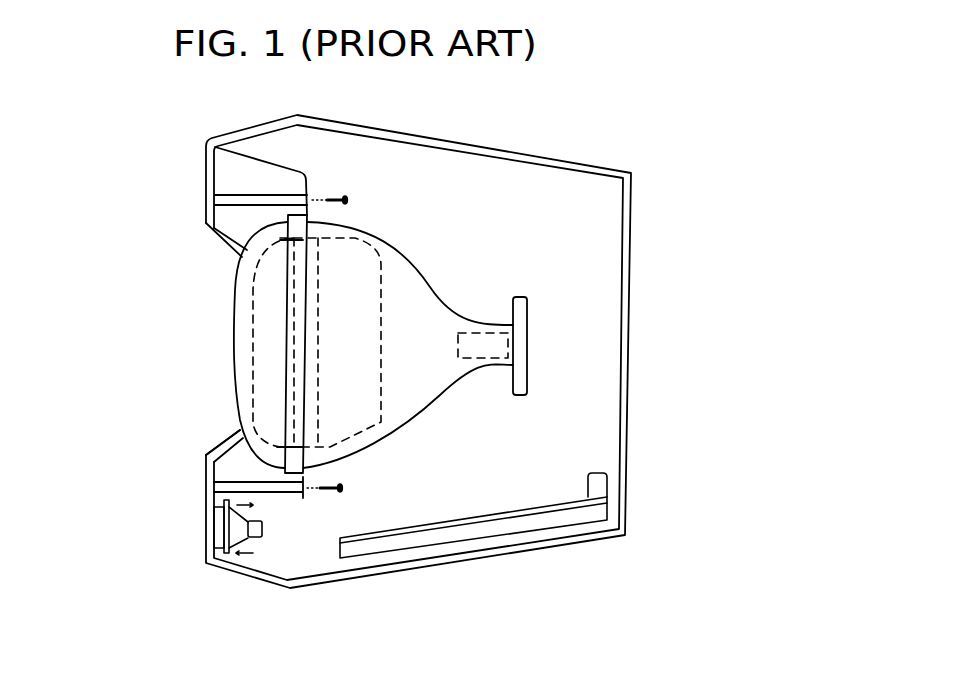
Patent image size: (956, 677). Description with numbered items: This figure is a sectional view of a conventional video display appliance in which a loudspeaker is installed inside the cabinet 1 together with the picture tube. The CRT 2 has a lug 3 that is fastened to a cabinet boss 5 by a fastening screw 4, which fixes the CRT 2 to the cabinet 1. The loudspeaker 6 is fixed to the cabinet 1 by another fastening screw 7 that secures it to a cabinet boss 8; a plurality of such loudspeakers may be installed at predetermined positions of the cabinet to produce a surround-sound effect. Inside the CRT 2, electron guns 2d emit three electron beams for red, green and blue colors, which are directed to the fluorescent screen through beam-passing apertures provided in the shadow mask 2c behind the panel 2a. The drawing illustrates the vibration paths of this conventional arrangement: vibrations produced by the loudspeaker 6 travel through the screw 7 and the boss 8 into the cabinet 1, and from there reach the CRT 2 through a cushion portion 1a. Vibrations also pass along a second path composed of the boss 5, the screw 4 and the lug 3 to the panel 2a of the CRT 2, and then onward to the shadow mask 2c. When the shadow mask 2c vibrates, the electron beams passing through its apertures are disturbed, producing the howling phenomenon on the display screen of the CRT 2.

The cabinet 1 is at (213, 217).
The cushion portion 1a is at (238, 430).
The CRT 2 is at (400, 235).
The panel 2a is at (423, 410).
The shadow mask 2c is at (252, 337).
The electron guns 2d is at (481, 348).
The lug 3 is at (215, 147).
The fastening screw 4 is at (348, 200).
The cabinet boss 5 is at (236, 200).
The loudspeaker 6 is at (235, 527).
The fastening screw 7 is at (253, 553).
The cabinet boss 8 is at (217, 548).